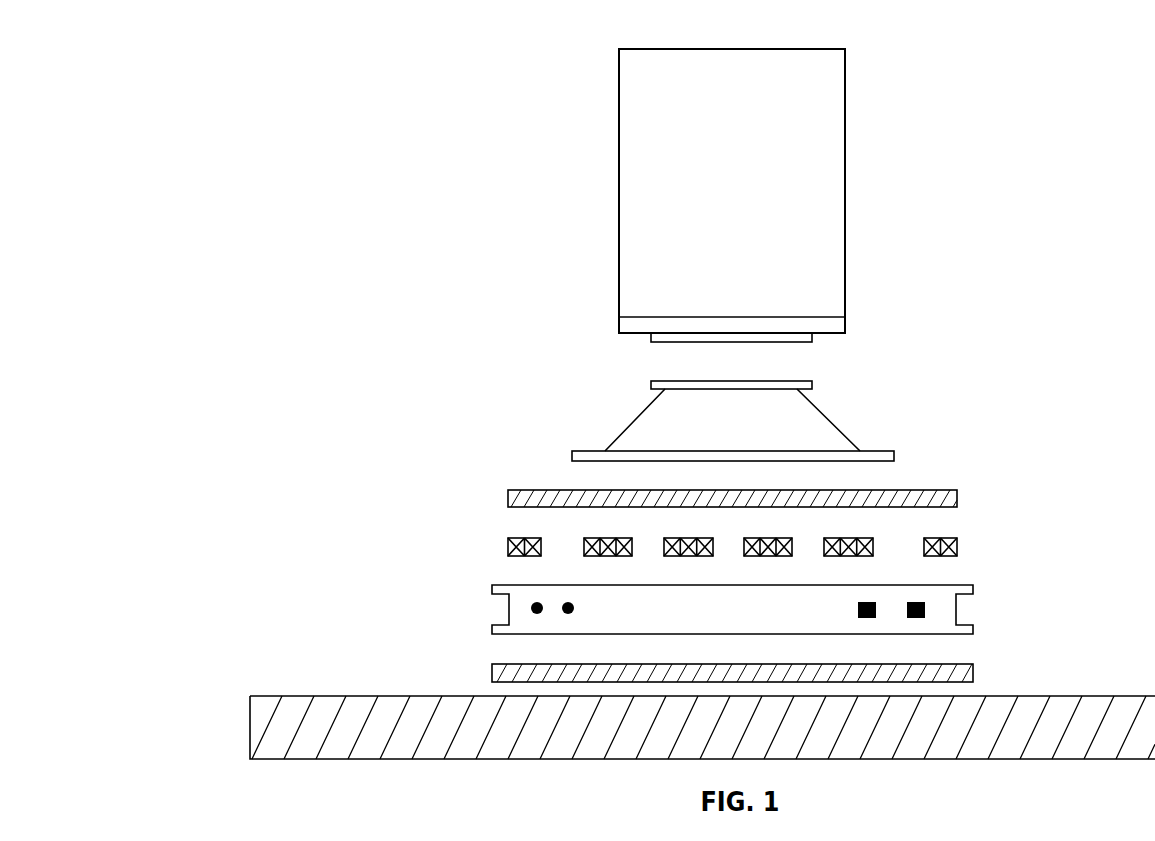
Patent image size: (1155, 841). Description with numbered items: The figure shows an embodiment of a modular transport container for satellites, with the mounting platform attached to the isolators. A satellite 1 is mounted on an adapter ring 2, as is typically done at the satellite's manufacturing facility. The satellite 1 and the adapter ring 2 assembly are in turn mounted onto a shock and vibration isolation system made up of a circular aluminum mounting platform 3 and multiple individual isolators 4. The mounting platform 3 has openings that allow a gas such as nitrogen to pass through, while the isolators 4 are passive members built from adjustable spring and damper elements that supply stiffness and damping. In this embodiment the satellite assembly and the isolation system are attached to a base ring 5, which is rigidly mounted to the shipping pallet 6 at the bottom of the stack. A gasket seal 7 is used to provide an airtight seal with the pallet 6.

The satellite 1 is at (617, 116).
The adapter ring 2 is at (637, 418).
The mounting platform 3 is at (503, 490).
The isolators 4 is at (535, 558).
The base ring 5 is at (960, 615).
The shipping pallet 6 is at (312, 695).
The gasket seal 7 is at (973, 670).